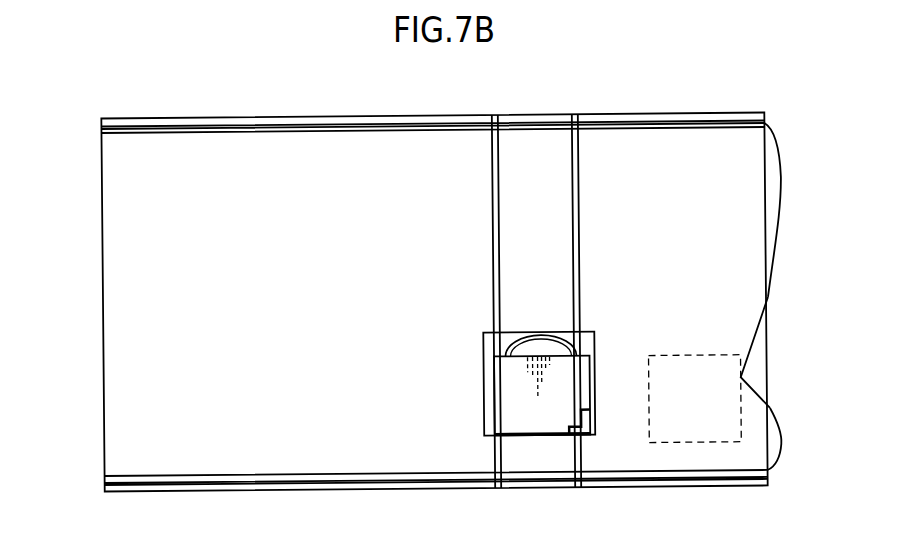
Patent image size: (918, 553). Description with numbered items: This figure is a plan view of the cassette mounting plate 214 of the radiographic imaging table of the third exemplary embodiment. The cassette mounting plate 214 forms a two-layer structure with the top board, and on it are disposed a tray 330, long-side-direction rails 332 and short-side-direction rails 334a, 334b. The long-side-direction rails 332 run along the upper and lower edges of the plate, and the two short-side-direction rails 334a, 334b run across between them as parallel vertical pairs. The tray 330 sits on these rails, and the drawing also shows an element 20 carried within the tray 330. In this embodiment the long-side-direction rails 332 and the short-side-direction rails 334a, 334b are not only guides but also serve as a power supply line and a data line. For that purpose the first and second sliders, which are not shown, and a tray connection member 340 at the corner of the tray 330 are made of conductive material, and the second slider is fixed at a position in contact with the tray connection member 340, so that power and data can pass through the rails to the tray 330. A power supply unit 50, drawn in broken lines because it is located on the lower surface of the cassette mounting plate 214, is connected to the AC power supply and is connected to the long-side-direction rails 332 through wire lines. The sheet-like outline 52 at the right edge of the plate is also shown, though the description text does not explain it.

The cassette mounting plate 214 is at (118, 325).
The long-side-direction rails 332 is at (205, 130).
The short-side-direction rail 334a is at (493, 178).
The short-side-direction rail 334b is at (580, 190).
The paper sheet 52 is at (773, 257).
The tray 330 is at (483, 343).
The sensor unit 20 is at (503, 397).
The tray connection member 340 is at (592, 432).
The power supply unit 50 is at (697, 447).